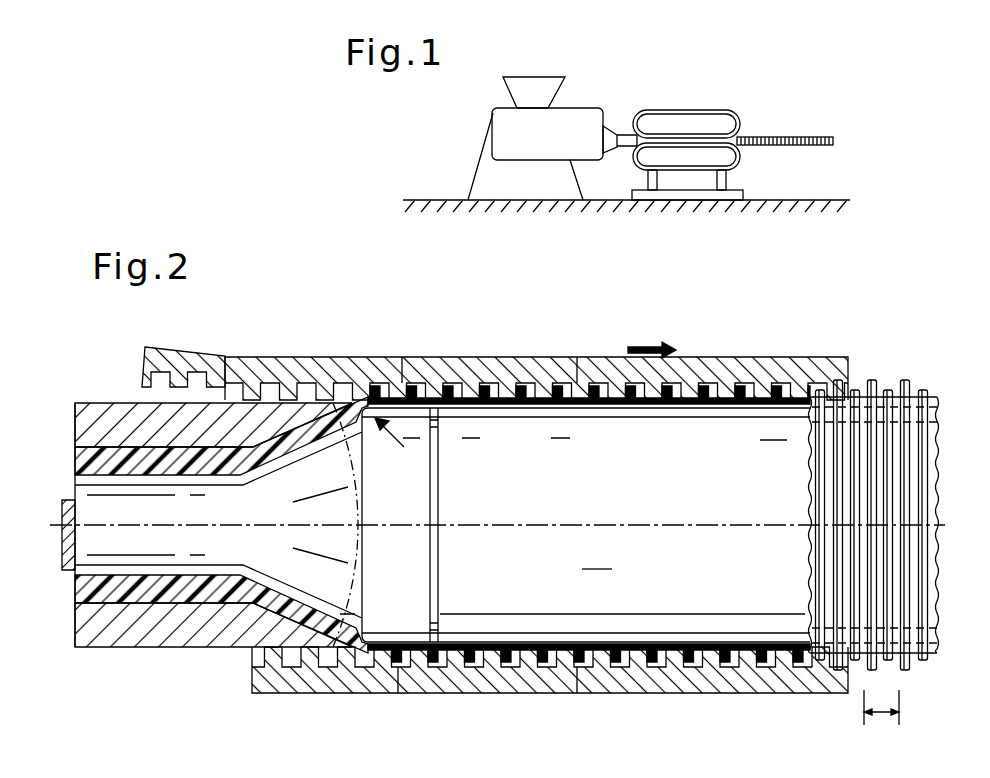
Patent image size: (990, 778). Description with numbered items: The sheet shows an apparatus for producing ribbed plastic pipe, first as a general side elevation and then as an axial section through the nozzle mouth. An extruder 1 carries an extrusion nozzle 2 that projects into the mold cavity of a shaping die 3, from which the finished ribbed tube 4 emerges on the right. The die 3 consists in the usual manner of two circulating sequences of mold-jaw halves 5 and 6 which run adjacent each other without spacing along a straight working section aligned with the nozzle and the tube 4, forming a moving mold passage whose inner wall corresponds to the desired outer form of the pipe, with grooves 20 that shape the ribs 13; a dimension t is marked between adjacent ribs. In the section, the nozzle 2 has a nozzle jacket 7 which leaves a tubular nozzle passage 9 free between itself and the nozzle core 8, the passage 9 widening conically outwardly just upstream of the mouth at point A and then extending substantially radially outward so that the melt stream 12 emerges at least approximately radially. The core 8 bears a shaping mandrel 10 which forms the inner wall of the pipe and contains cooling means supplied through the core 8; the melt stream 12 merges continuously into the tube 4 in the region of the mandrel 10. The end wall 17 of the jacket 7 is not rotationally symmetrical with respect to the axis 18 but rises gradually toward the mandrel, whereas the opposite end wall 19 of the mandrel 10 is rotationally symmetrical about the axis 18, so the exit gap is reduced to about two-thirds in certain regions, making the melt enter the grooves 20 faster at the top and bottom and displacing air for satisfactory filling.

In FIG. 1, the extruder 1 is at (515, 137).
In FIG. 1, the extrusion nozzle 2 is at (627, 130).
In FIG. 2, the extrusion nozzle 2 is at (148, 646).
In FIG. 1, the extrusion die 3 is at (701, 110).
In FIG. 2, the extrusion die 3 is at (495, 513).
In FIG. 1, the ribbed tube 4 is at (797, 137).
In FIG. 2, the ribbed tube 4 is at (897, 515).
In FIG. 1, the mold-jaw halves 5 is at (720, 110).
In FIG. 2, the mold-jaw halves 5 is at (495, 515).
In FIG. 1, the mold-jaw halves 6 is at (710, 173).
In FIG. 2, the mold-jaw halves 6 is at (392, 688).
In FIG. 2, the nozzle jacket 7 is at (116, 410).
In FIG. 2, the nozzle core 8 is at (66, 522).
In FIG. 2, the nozzle passage 9 is at (100, 604).
In FIG. 2, the shaping mandrel 10 is at (575, 525).
In FIG. 2, the melt stream 12 is at (292, 443).
In FIG. 2, the ribs 13 is at (905, 380).
In FIG. 2, the end wall of the nozzle jacket 17 is at (352, 514).
In FIG. 2, the axis 18 is at (652, 524).
In FIG. 2, the end wall of the mandrel 19 is at (368, 540).
In FIG. 2, the grooves 20 is at (190, 382).
In FIG. 2, the point of conical widening A is at (391, 451).
In FIG. 2, the rib spacing t is at (881, 708).